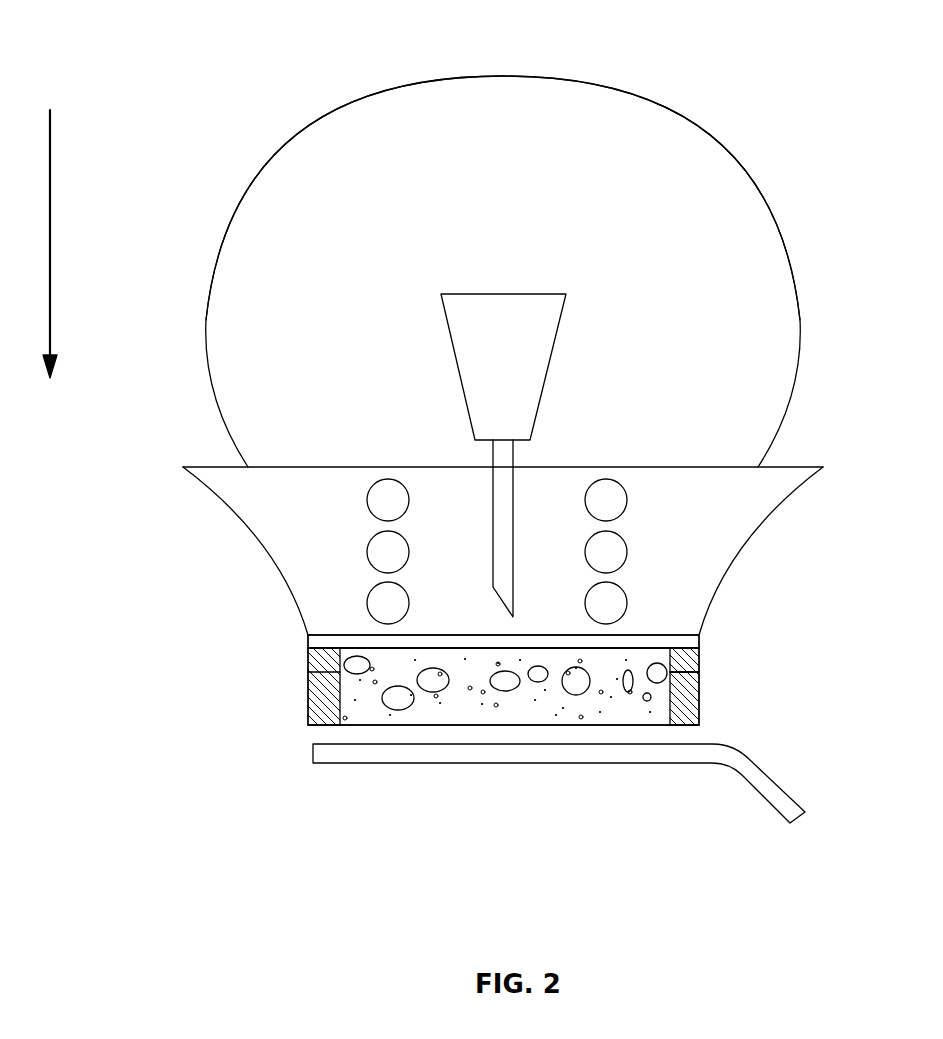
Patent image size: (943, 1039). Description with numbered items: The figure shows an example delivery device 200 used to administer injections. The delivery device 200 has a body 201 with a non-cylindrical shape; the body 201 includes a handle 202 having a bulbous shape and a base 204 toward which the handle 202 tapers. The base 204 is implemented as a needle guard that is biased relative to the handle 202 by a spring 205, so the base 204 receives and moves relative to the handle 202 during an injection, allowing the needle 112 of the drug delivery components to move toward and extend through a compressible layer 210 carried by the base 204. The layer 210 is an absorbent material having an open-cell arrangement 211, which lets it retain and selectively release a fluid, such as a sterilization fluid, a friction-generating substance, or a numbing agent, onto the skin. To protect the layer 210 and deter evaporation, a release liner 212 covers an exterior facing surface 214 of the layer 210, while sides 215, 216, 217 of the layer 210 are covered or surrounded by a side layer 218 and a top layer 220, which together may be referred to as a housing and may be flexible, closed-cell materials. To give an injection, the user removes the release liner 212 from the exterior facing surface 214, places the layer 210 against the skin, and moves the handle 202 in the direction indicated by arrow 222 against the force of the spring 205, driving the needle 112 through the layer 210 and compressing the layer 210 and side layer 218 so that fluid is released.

The delivery device 200 is at (238, 44).
The body 201 is at (727, 185).
The handle 202 is at (631, 112).
The arrow 222 is at (50, 197).
The needle 112 is at (503, 527).
The spring 205 is at (382, 552).
The base 204 is at (290, 682).
The side 216 is at (652, 648).
The top layer 220 is at (625, 648).
The side 217 is at (340, 673).
The side 215 is at (670, 673).
The side layer 218 is at (680, 705).
The compressible layer 210 is at (457, 705).
The open-cell arrangement 211 is at (395, 700).
The exterior facing surface 214 is at (405, 725).
The release liner 212 is at (620, 763).